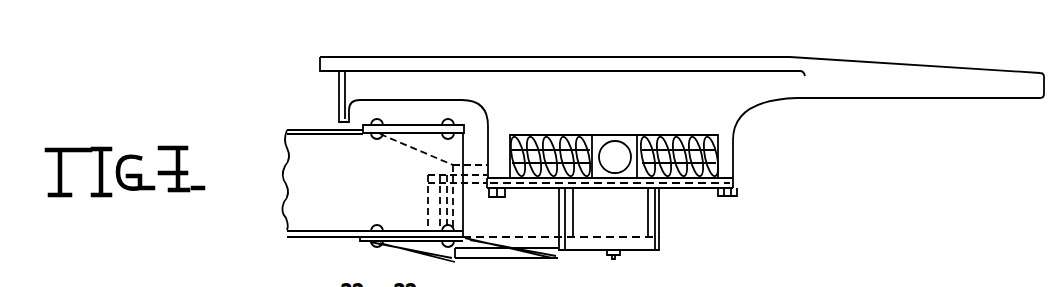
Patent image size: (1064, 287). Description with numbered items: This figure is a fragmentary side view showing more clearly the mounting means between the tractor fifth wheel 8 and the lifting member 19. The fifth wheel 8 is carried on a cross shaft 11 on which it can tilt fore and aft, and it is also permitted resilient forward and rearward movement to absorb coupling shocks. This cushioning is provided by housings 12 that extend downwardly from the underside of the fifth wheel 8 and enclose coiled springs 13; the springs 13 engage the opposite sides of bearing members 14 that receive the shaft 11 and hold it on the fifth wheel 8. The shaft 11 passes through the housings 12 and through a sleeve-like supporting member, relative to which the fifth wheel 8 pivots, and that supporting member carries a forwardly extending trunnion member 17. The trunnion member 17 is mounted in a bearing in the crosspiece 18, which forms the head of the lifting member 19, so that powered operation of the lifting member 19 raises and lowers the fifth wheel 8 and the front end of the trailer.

The tractor fifth wheel 8 is at (697, 78).
The cross shaft 11 is at (610, 150).
The housings 12 is at (728, 165).
The coiled springs 13 is at (702, 175).
The bearing members 14 is at (628, 136).
The trunnion member 17 is at (637, 232).
The crosspiece 18 is at (557, 245).
The lifting member 19 is at (315, 148).